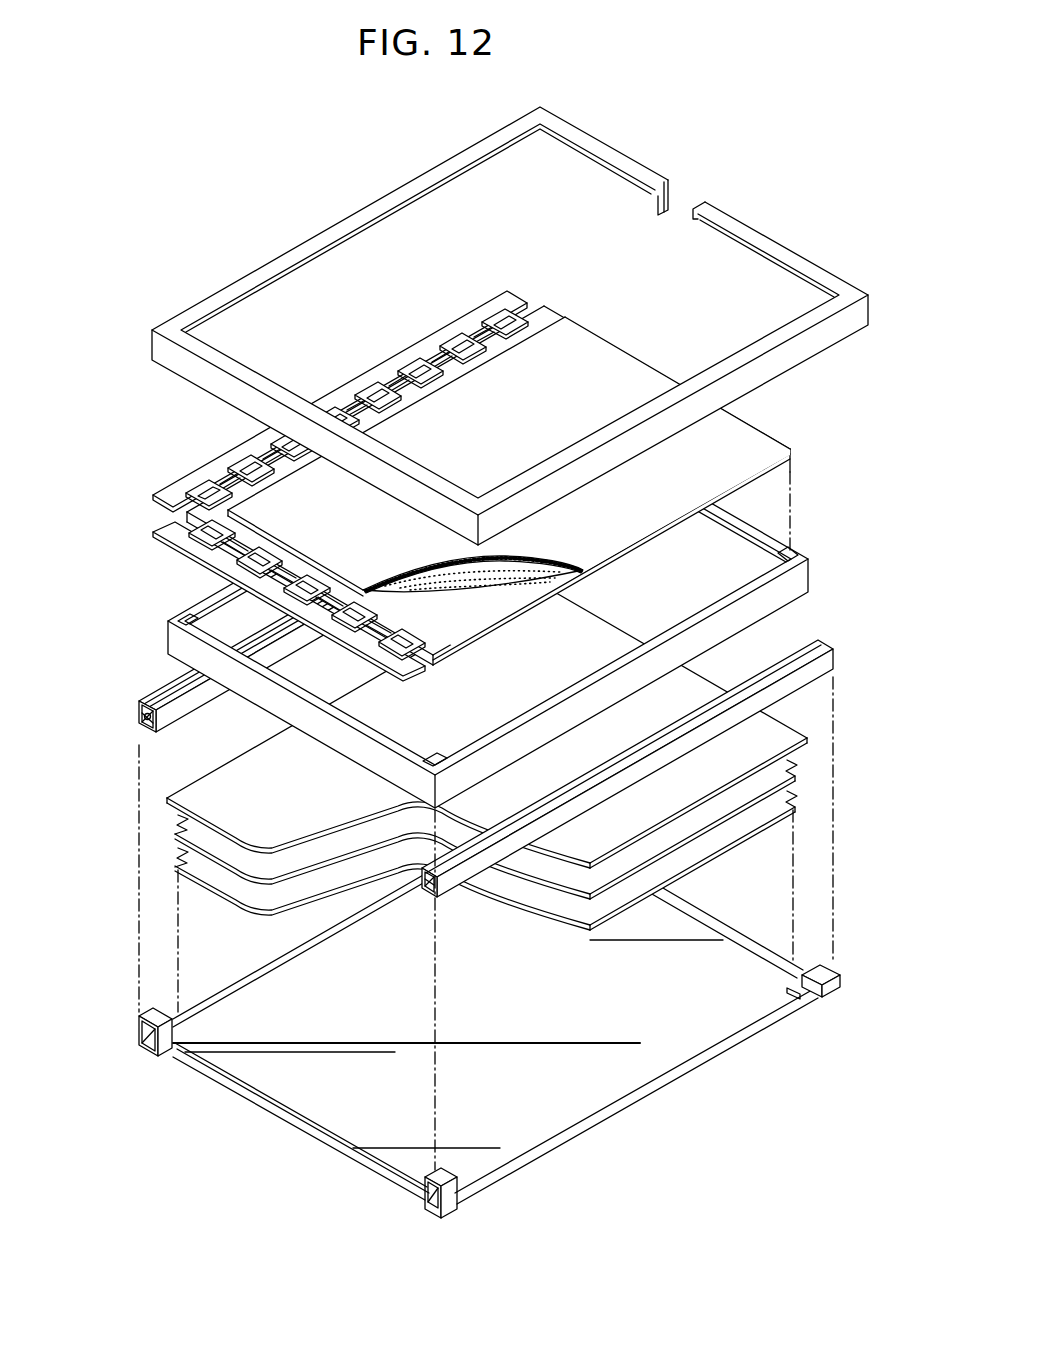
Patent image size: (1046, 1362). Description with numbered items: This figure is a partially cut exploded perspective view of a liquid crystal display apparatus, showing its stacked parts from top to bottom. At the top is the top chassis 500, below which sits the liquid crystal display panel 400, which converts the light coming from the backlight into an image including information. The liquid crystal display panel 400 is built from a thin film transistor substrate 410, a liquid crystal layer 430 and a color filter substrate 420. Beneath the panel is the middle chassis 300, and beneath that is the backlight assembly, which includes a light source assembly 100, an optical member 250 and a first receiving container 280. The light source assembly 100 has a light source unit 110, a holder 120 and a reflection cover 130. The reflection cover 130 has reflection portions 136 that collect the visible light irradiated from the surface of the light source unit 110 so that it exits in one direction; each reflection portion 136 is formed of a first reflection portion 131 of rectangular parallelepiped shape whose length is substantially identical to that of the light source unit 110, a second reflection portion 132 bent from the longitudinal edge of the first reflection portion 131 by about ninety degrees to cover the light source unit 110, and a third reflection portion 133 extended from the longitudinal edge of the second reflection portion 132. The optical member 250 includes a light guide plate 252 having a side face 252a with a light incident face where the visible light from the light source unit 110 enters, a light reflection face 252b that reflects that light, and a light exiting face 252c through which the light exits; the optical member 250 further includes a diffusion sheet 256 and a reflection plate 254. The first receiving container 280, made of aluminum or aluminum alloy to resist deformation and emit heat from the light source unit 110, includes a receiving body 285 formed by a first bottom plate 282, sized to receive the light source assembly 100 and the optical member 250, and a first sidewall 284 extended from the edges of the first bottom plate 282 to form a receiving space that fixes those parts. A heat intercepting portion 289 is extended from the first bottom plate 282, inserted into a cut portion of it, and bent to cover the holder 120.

The top chassis 500 is at (164, 351).
The liquid crystal display panel 400 is at (464, 490).
The thin film transistor substrate 410 is at (453, 621).
The color filter substrate 420 is at (762, 447).
The liquid crystal layer 430 is at (532, 578).
The middle chassis 300 is at (802, 583).
The light source assembly 100 is at (291, 620).
The light source unit 110 is at (222, 686).
The holder 120 is at (143, 736).
The reflection cover 130 is at (95, 695).
The first reflection portion 131 is at (152, 703).
The second reflection portion 132 is at (143, 713).
The third reflection portion 133 is at (148, 722).
The reflection portion 136 is at (91, 709).
The optical member 250 is at (417, 772).
The diffusion sheet 256 is at (160, 799).
The light guide plate 252 is at (434, 787).
The side face 252a is at (226, 864).
The light reflection face 252b is at (275, 884).
The light exiting face 252c is at (293, 877).
The reflection plate 254 is at (160, 862).
The first receiving container 280 is at (510, 1046).
The first bottom plate 282 is at (588, 1098).
The first sidewall 284 is at (580, 1135).
The receiving body 285 is at (495, 1072).
The heat intercepting portion 289 is at (834, 956).